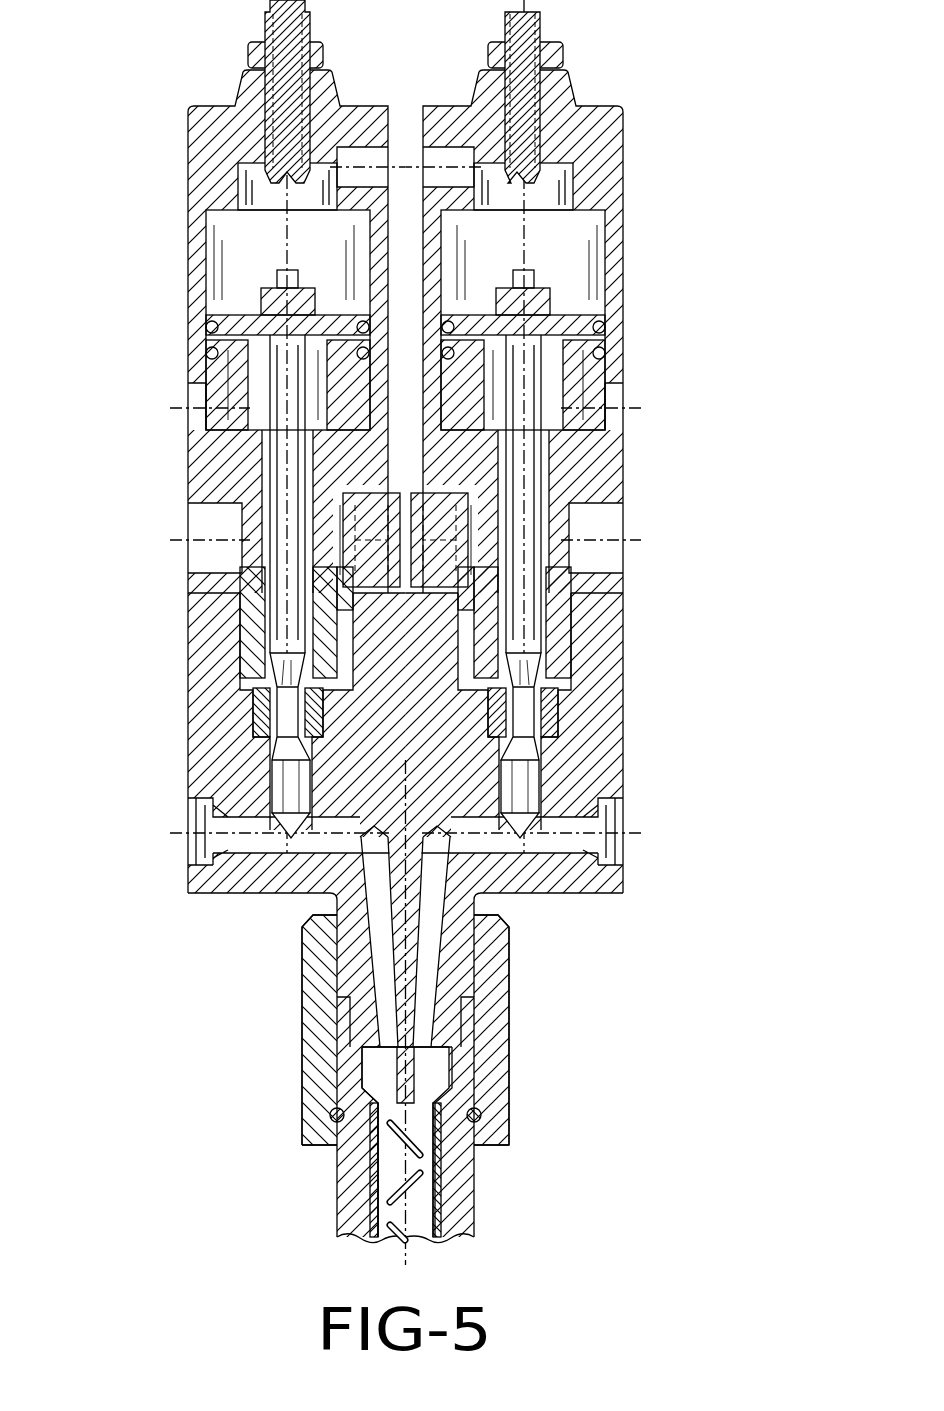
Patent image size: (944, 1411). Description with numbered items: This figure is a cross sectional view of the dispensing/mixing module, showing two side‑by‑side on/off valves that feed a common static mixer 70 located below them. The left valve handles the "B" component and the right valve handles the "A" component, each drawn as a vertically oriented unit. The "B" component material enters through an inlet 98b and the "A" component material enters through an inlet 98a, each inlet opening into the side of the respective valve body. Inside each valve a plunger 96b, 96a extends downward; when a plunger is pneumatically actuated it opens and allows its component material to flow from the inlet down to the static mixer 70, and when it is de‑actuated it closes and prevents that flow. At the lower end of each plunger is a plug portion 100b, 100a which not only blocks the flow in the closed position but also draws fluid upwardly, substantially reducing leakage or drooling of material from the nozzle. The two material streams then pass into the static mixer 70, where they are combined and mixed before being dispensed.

The inlet 98b is at (222, 556).
The plunger 96b is at (280, 637).
The plug portion 100b is at (278, 778).
The inlet 98a is at (587, 560).
The plunger 96a is at (533, 637).
The plug portion 100a is at (527, 778).
The static mixer 70 is at (417, 1212).